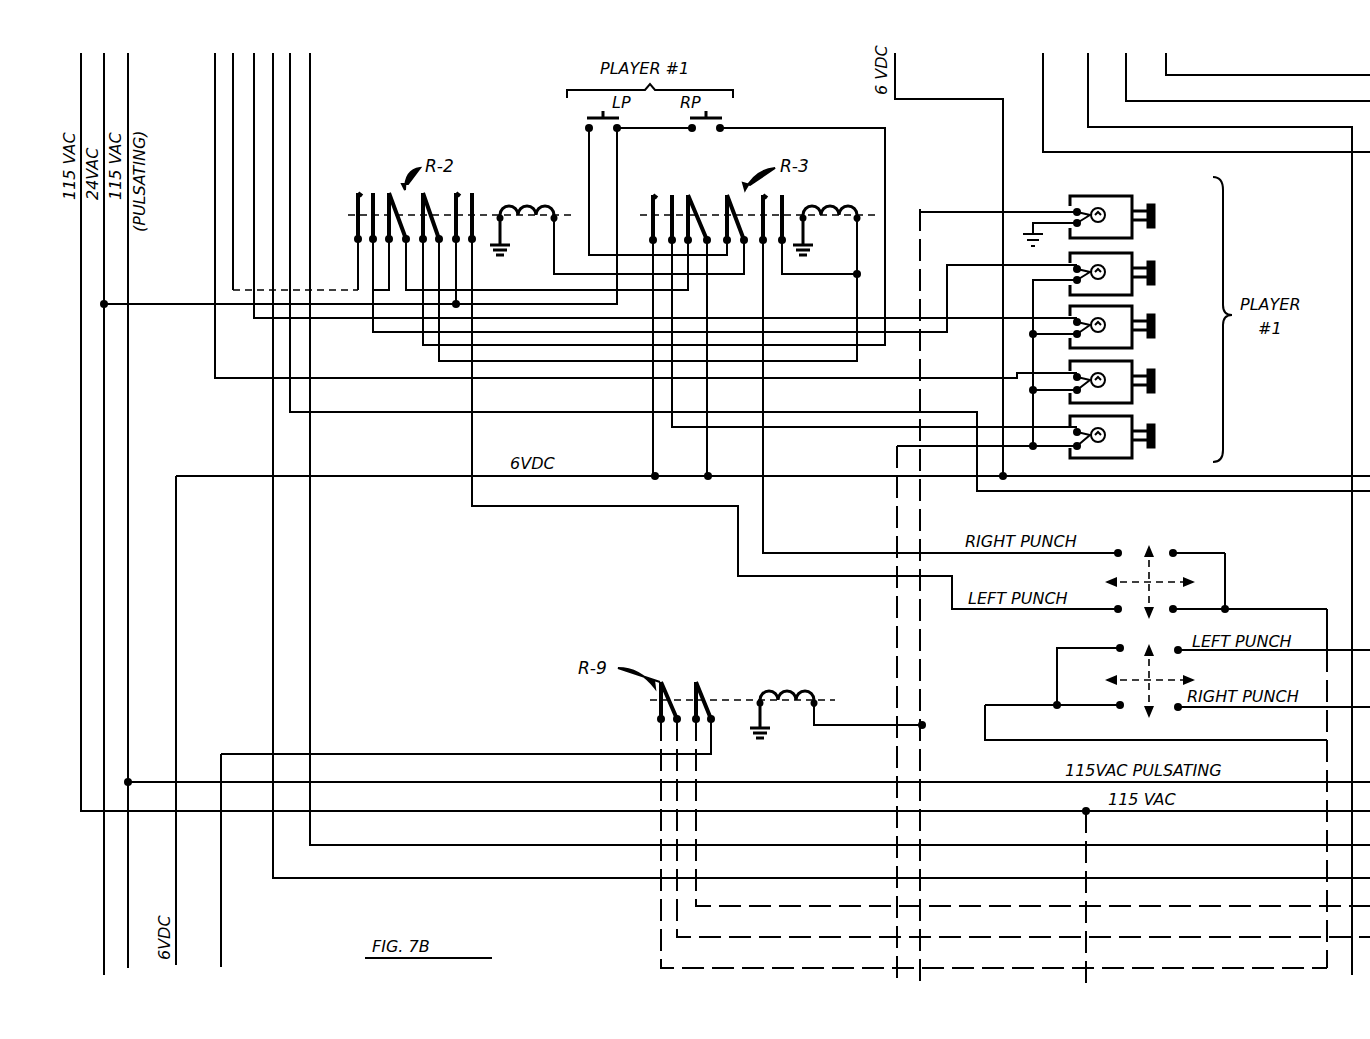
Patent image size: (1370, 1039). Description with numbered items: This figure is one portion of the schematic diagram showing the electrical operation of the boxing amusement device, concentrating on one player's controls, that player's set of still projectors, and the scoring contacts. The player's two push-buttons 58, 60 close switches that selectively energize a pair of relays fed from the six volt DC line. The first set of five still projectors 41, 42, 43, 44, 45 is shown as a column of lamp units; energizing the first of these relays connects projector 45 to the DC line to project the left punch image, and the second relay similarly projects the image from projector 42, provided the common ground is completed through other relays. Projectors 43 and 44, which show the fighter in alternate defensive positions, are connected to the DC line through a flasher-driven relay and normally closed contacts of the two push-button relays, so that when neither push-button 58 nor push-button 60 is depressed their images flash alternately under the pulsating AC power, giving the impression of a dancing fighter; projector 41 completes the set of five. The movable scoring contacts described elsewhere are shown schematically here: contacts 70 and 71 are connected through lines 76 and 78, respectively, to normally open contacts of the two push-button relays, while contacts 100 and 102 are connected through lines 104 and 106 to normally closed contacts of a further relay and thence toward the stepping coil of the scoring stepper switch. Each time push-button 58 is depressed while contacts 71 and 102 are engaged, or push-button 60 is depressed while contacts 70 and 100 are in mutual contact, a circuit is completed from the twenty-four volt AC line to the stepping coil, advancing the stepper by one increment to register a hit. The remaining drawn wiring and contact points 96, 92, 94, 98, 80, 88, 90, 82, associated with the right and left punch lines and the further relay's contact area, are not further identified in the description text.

The push-button 58 is at (582, 118).
The push-button 60 is at (722, 118).
The still projector 41 is at (1090, 196).
The still projector 45 is at (1130, 254).
The still projector 44 is at (1130, 307).
The still projector 43 is at (1130, 362).
The still projector 42 is at (1130, 417).
The line 76 is at (942, 552).
The line 78 is at (940, 600).
The movable contact 70 is at (1113, 562).
The movable contact 71 is at (1113, 618).
The contact 100 is at (1173, 551).
The line 104 is at (1225, 553).
The contact 102 is at (1175, 612).
The line 106 is at (1275, 607).
The conductor 96 is at (1338, 640).
The switch contact 92 is at (1180, 654).
The switch contact 94 is at (1180, 710).
The conductor 98 is at (1297, 713).
The switch contact 80 is at (1118, 652).
The conductor 88 is at (1055, 679).
The conductor 90 is at (1100, 703).
The switch contact 82 is at (1118, 713).